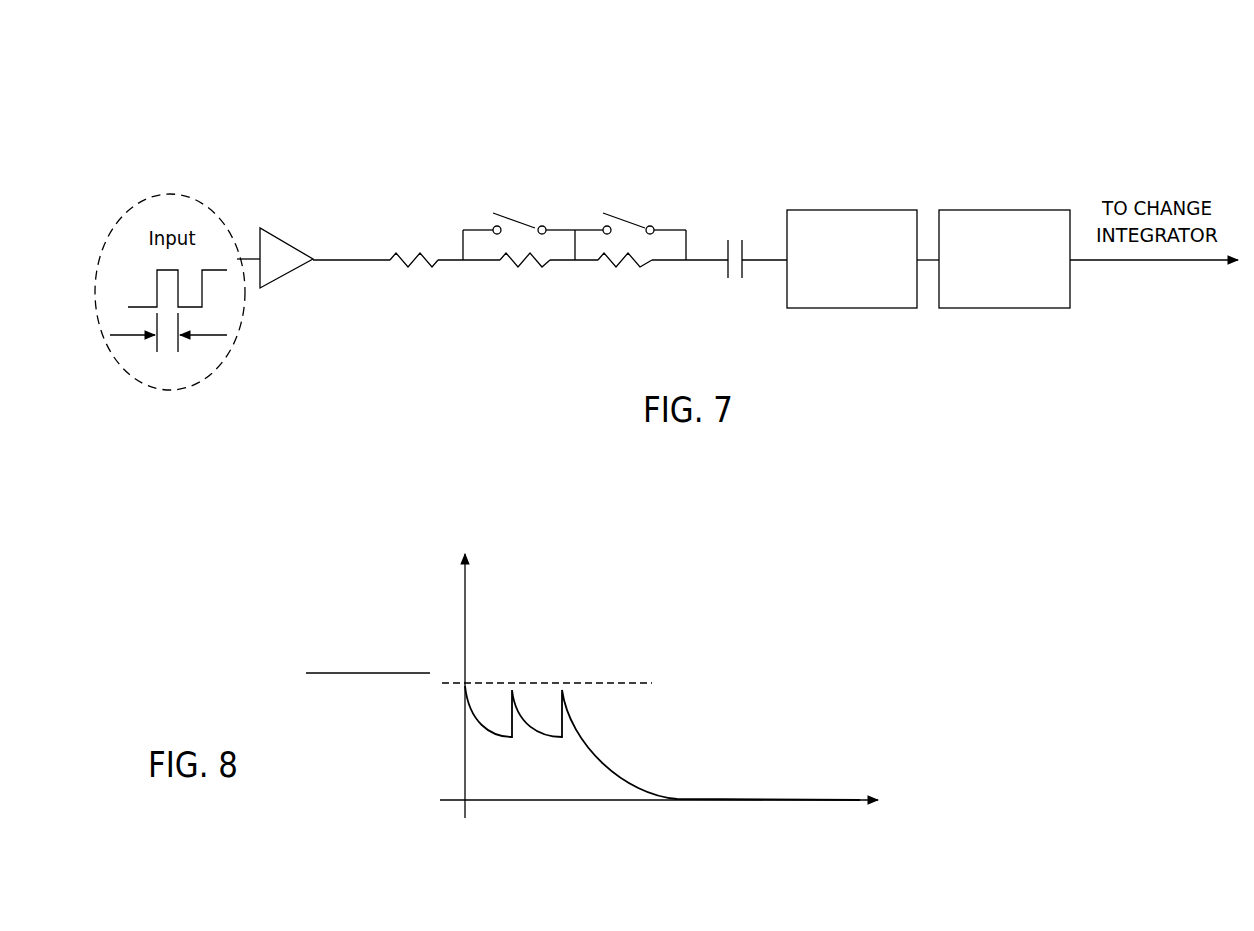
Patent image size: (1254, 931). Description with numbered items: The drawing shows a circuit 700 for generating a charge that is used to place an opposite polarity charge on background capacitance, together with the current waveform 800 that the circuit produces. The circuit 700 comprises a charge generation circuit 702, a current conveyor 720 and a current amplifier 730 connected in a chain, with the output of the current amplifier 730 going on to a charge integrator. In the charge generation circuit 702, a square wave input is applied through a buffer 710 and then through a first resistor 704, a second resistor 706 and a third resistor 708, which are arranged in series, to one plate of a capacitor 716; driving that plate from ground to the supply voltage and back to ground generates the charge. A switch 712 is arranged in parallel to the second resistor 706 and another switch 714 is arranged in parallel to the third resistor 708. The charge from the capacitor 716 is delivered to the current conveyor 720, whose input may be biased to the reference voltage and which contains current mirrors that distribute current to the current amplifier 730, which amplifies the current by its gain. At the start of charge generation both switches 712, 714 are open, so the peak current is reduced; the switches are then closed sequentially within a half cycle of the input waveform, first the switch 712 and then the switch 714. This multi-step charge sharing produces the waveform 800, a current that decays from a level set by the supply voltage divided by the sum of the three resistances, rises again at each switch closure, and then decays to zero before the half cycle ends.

In FIG. 7, the circuit 700 is at (236, 84).
In FIG. 7, the charge generation circuit 702 is at (529, 234).
In FIG. 7, the first resistor 704 is at (377, 314).
In FIG. 7, the second resistor 706 is at (506, 314).
In FIG. 7, the third resistor 708 is at (611, 314).
In FIG. 7, the buffer 710 is at (280, 277).
In FIG. 7, the switch 712 is at (508, 169).
In FIG. 7, the switch 714 is at (631, 169).
In FIG. 7, the capacitor 716 is at (739, 234).
In FIG. 7, the current conveyor 720 is at (833, 297).
In FIG. 7, the current amplifier 730 is at (985, 297).
In FIG. 8, the waveform 800 is at (539, 532).